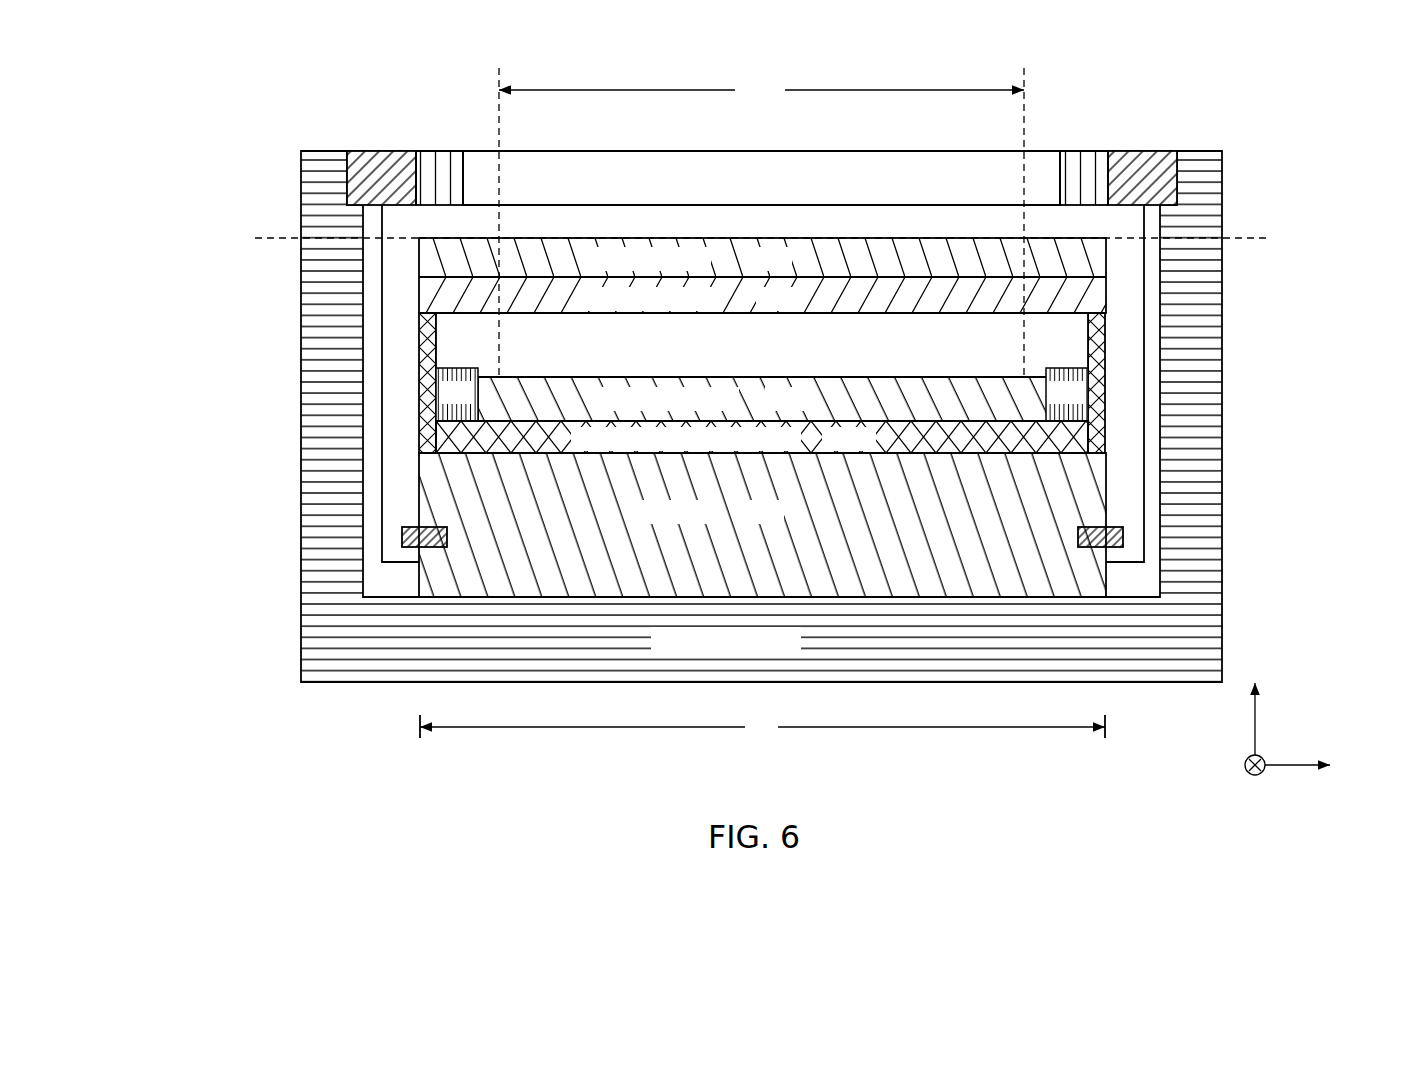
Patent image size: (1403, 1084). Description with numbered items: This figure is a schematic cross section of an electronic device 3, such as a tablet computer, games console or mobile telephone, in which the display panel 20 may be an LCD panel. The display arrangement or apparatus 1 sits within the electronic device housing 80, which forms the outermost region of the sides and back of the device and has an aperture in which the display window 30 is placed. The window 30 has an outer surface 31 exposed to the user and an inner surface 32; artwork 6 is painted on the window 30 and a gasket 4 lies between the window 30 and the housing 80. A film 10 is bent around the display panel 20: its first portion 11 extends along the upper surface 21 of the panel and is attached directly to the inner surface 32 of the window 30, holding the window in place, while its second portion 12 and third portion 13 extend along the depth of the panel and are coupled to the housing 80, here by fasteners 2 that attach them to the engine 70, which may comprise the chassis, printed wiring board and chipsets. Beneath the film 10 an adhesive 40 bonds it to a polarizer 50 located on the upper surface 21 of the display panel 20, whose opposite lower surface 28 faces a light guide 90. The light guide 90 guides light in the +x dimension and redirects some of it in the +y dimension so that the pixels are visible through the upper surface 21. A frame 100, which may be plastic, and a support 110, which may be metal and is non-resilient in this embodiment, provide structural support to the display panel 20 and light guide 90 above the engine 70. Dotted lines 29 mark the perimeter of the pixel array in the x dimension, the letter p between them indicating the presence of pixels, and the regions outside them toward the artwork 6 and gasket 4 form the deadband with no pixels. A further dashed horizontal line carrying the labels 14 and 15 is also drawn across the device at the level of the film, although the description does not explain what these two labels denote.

The apparatus 1 is at (1153, 66).
The fasteners 2 is at (409, 527).
The electronic device 3 is at (298, 715).
The gasket 4 is at (378, 151).
The artwork 6 is at (431, 151).
The film 10 is at (763, 197).
The first portion 11 is at (912, 216).
The second portion 12 is at (1128, 284).
The third portion 13 is at (400, 392).
The reference plane 14 is at (1262, 238).
The reference plane end 15 is at (270, 240).
The display panel 20 is at (762, 383).
The upper surface 21 is at (866, 314).
The lower surface 28 is at (893, 376).
The dotted line 29 is at (498, 68).
The display window 30 is at (761, 155).
The outer surface 31 is at (848, 151).
The inner surface 32 is at (838, 204).
The adhesive 40 is at (762, 275).
The polarizer 50 is at (762, 295).
The engine 70 is at (762, 525).
The electronic device housing 80 is at (761, 416).
The light guide 90 is at (1214, 755).
The frame 100 is at (762, 394).
The support 110 is at (762, 437).